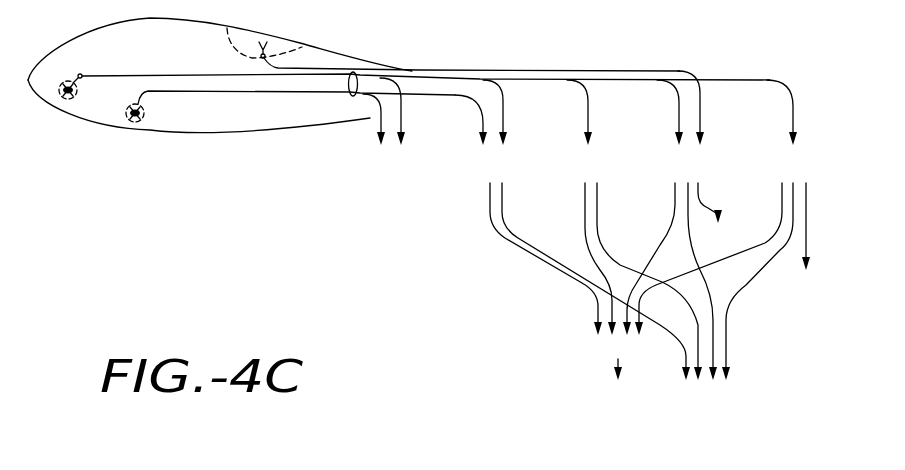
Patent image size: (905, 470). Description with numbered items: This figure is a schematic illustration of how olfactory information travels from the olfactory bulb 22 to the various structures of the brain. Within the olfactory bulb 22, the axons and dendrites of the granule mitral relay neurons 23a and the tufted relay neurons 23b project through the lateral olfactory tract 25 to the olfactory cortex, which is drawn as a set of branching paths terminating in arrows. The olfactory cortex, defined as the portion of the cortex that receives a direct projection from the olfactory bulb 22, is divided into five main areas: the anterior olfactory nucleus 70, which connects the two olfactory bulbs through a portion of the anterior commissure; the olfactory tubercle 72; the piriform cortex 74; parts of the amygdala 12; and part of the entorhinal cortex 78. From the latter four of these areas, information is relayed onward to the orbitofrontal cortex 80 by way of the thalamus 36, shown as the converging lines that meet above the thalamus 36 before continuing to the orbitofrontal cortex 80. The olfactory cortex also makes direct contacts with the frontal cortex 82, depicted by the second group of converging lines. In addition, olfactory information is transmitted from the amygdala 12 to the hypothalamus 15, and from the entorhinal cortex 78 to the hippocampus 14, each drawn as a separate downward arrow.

The amygdala 12 is at (680, 122).
The hippocampus 14 is at (805, 239).
The hypothalamus 15 is at (712, 216).
The olfactory bulb 22 is at (273, 129).
The granule mitral relay neurons 23a is at (62, 101).
The tufted relay neurons 23b is at (145, 124).
The lateral olfactory tract 25 is at (357, 72).
The thalamus 36 is at (636, 271).
The anterior olfactory nucleus 70 is at (384, 126).
The olfactory tubercle 72 is at (481, 127).
The piriform cortex 74 is at (582, 127).
The entorhinal cortex 78 is at (785, 127).
The orbitofrontal cortex 80 is at (618, 383).
The frontal cortex 82 is at (647, 295).